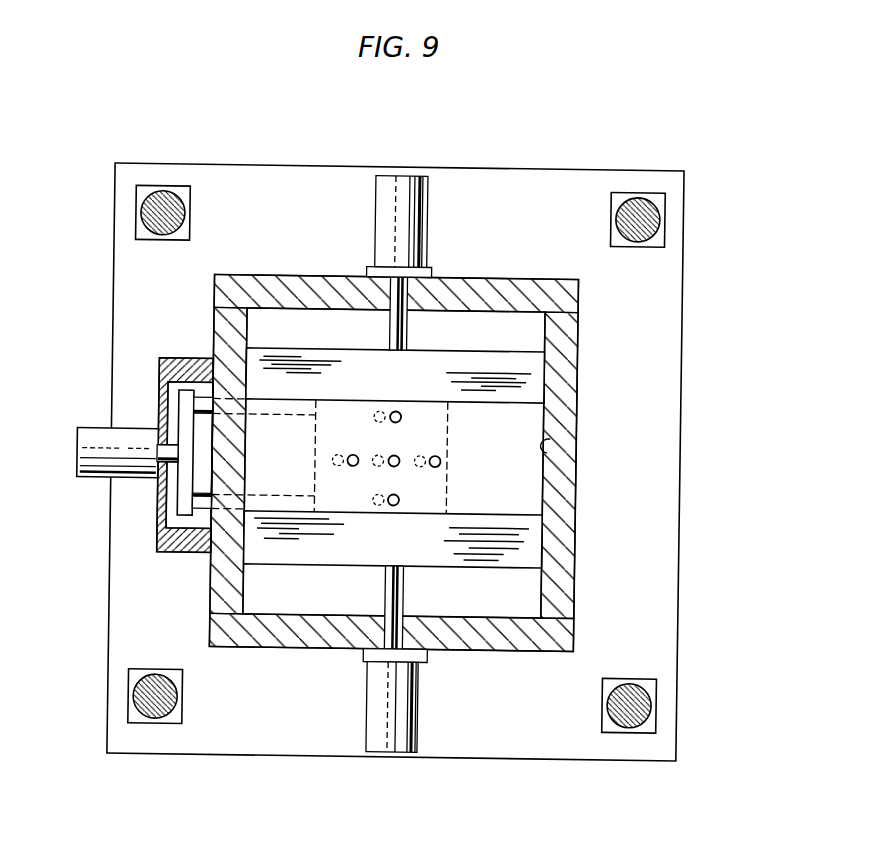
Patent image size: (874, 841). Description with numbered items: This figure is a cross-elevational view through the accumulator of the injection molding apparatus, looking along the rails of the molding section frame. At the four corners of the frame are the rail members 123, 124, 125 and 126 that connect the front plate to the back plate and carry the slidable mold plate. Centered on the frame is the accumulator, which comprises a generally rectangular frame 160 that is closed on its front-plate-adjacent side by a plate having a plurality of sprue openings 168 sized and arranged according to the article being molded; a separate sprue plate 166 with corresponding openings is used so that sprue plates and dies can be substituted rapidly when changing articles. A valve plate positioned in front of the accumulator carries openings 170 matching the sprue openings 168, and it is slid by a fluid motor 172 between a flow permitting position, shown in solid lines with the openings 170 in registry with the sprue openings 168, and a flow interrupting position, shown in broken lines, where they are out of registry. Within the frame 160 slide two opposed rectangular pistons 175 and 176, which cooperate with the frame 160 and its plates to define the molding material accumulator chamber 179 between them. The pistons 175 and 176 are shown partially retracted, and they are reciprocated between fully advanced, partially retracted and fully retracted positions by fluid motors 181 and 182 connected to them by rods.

The rail member 123 is at (634, 197).
The rail member 124 is at (659, 701).
The rail member 125 is at (169, 191).
The rail member 126 is at (135, 701).
The frame 160 is at (577, 592).
The sprue plate 166 is at (435, 497).
The sprue openings 168 is at (457, 429).
The openings 170 is at (337, 463).
The fluid motor 172 is at (93, 480).
The piston 175 is at (526, 541).
The piston 176 is at (529, 368).
The molding material accumulator chamber 179 is at (545, 445).
The fluid motor 181 is at (370, 710).
The fluid motor 182 is at (423, 222).